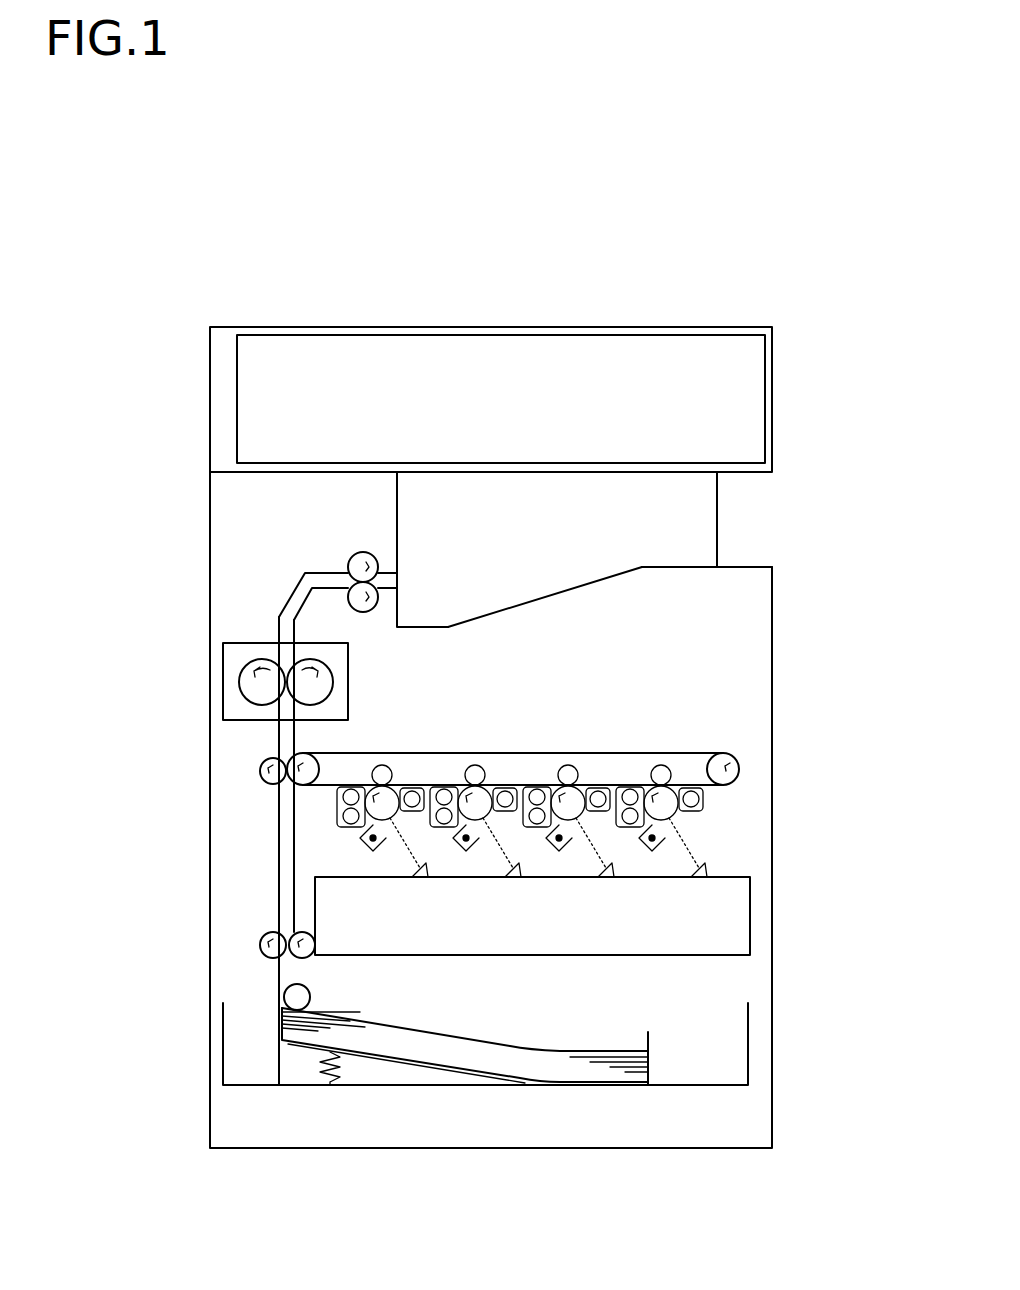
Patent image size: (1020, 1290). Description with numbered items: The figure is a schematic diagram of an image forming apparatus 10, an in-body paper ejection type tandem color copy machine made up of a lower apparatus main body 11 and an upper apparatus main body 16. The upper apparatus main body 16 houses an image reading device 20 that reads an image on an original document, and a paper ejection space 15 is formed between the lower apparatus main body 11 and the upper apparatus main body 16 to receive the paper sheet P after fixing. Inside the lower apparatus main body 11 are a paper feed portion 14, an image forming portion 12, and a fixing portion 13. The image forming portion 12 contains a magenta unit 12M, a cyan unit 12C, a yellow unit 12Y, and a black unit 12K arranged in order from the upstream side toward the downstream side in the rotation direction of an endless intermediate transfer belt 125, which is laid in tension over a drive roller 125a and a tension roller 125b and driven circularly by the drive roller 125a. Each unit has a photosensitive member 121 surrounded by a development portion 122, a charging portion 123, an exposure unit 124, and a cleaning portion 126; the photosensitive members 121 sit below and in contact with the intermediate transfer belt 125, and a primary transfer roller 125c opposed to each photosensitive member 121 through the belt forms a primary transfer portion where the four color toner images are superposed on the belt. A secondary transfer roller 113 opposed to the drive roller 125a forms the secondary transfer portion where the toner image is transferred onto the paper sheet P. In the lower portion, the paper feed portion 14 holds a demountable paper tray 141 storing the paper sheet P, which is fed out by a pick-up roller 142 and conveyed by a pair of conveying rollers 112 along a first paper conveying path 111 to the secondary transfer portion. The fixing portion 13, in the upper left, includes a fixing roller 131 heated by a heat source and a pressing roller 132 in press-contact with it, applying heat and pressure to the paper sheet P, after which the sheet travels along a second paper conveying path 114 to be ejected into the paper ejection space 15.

The image forming apparatus 10 is at (557, 676).
The lower apparatus main body 11 is at (776, 604).
The image forming portion 12 is at (595, 812).
The black unit 12K is at (401, 747).
The yellow unit 12Y is at (479, 746).
The cyan unit 12C is at (570, 748).
The magenta unit 12M is at (728, 835).
The fixing portion 13 is at (211, 677).
The paper feed portion 14 is at (485, 1103).
The paper ejection space 15 is at (584, 549).
The upper apparatus main body 16 is at (532, 364).
The image reading device 20 is at (511, 357).
The first paper conveying path 111 is at (287, 855).
The pair of conveying rollers 112 is at (290, 960).
The secondary transfer roller 113 is at (265, 778).
The second paper conveying path 114 is at (293, 605).
The photosensitive member 121 is at (675, 815).
The development portion 122 is at (704, 802).
The charging portion 123 is at (662, 845).
The exposure unit 124 is at (735, 934).
The intermediate transfer belt 125 is at (578, 737).
The drive roller 125a is at (318, 758).
The tension roller 125b is at (737, 775).
The primary transfer roller 125c is at (668, 768).
The cleaning portion 126 is at (628, 828).
The fixing roller 131 is at (302, 655).
The pressing roller 132 is at (242, 678).
The paper tray 141 is at (652, 1040).
The pick-up roller 142 is at (311, 995).
The paper sheet P is at (483, 1045).